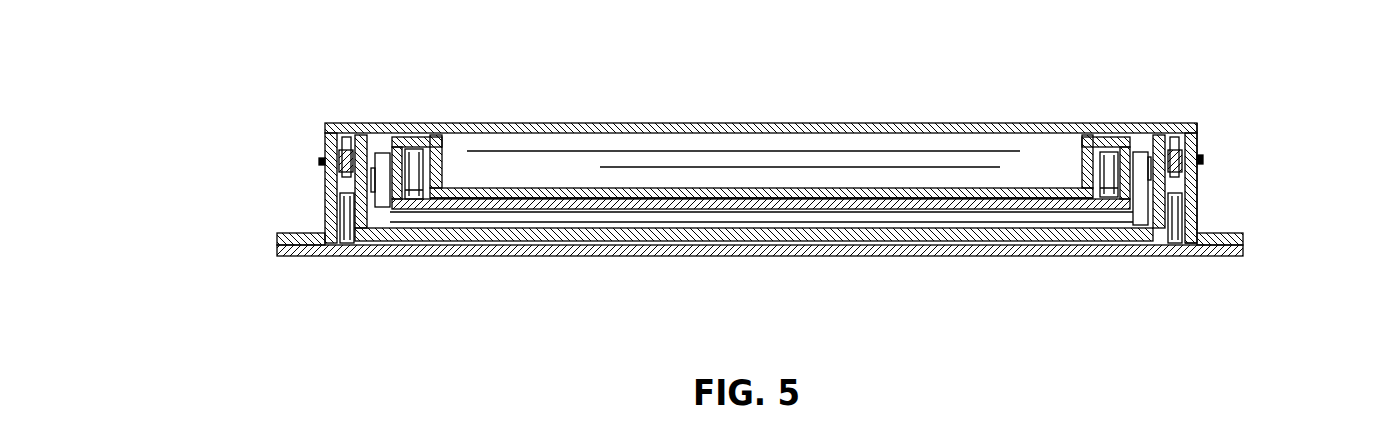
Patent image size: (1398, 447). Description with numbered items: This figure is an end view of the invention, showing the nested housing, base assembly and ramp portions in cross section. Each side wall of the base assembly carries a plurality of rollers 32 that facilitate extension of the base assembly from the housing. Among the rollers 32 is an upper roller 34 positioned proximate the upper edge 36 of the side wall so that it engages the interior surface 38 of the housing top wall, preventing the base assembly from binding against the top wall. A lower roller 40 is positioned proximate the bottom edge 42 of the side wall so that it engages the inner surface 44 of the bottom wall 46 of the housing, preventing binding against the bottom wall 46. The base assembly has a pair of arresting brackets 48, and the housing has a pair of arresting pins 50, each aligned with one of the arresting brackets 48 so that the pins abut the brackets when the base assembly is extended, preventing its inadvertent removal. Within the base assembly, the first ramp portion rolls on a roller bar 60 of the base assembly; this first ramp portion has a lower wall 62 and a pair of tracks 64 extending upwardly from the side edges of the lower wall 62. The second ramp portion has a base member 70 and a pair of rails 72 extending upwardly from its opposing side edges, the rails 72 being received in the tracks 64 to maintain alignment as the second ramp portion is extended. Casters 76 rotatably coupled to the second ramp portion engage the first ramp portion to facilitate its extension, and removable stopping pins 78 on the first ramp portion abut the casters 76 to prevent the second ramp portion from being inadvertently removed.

The rollers 32 is at (327, 193).
The upper roller 34 is at (1190, 134).
The upper edge 36 is at (1195, 123).
The interior surface 38 is at (1050, 150).
The lower roller 40 is at (352, 223).
The bottom edge 42 is at (1185, 245).
The inner surface 44 is at (1127, 245).
The bottom wall 46 is at (948, 238).
The arresting brackets 48 is at (1203, 158).
The arresting pins 50 is at (1198, 185).
The roller bar 60 is at (1057, 213).
The lower wall 62 is at (743, 205).
The tracks 64 is at (380, 136).
The base member 70 is at (873, 188).
The rails 72 is at (413, 158).
The casters 76 is at (410, 165).
The stopping pins 78 is at (1112, 145).